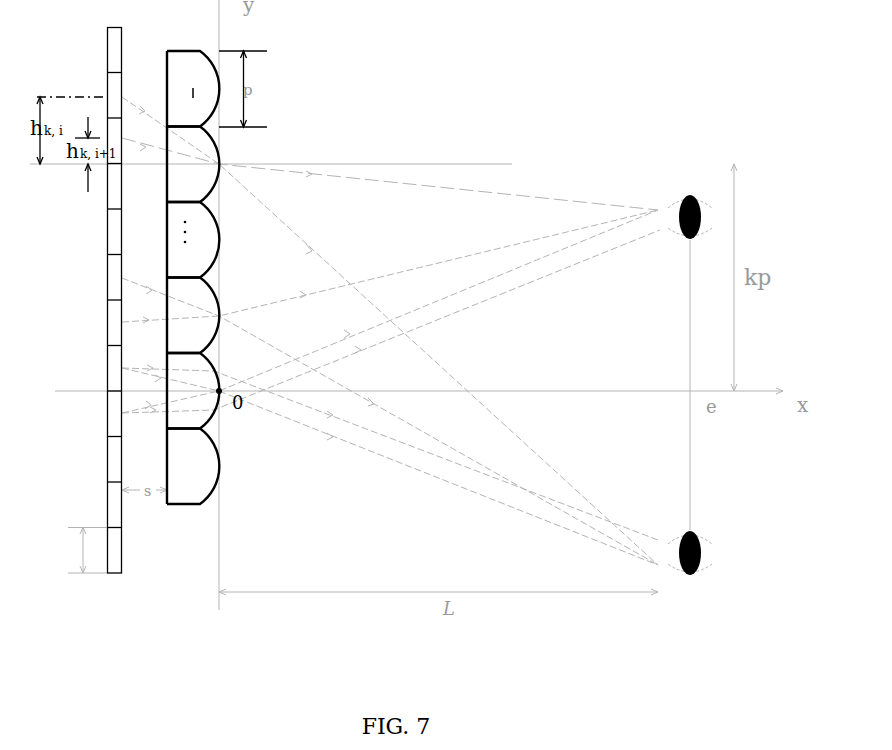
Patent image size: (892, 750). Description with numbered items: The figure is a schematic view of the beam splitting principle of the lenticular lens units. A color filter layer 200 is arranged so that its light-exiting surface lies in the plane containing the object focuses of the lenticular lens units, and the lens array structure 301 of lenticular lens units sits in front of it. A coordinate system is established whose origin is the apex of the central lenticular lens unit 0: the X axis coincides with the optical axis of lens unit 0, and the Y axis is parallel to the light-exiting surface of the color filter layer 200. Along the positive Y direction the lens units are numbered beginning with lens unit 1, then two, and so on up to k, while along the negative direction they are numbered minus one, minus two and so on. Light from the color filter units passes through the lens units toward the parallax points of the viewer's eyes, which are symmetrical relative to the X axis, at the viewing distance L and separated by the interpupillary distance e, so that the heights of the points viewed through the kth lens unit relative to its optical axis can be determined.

The color filter layer 200 is at (114, 573).
The lenticular lens array 301 is at (197, 359).
The central lenticular lens unit 0 is at (193, 392).
The lenticular lens unit 1 is at (193, 316).